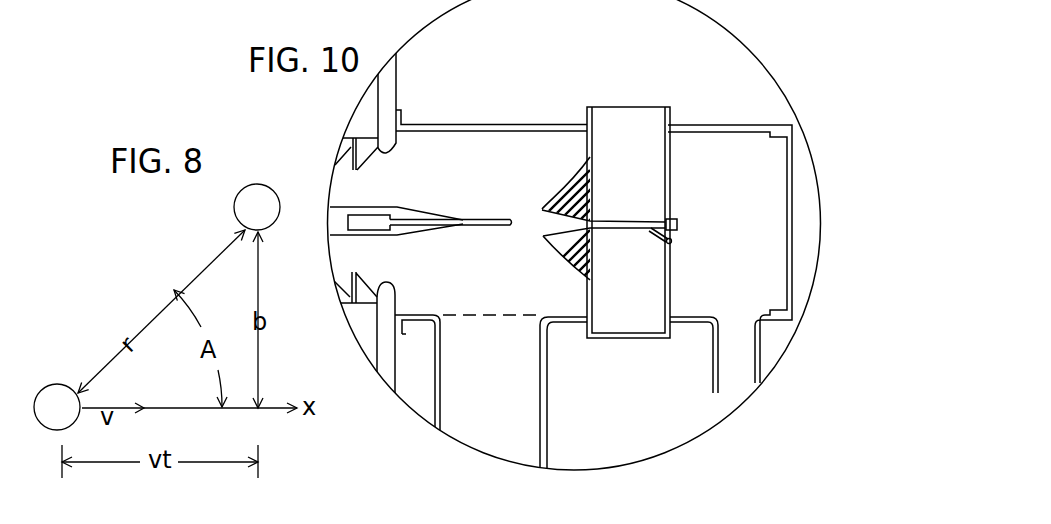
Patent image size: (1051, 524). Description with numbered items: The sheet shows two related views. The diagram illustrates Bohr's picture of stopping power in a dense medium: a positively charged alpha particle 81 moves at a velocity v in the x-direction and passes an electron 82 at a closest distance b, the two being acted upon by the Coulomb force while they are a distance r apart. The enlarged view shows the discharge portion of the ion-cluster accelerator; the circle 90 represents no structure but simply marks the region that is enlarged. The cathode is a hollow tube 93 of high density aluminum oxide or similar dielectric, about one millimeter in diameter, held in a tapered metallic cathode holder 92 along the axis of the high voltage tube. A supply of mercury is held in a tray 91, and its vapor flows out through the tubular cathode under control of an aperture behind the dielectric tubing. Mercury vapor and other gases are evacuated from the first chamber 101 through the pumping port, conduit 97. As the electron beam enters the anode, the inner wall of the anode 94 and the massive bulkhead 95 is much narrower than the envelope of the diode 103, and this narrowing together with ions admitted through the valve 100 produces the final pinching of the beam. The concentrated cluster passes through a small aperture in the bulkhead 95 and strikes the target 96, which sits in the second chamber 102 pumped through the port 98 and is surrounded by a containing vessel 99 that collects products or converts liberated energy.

In FIG. 8, the alpha particle 81 is at (45, 386).
In FIG. 8, the electron 82 is at (236, 201).
In FIG. 10, the circle 90 is at (790, 112).
In FIG. 10, the tray 91 is at (373, 212).
In FIG. 10, the tapered metallic cathode holder 92 is at (425, 212).
In FIG. 10, the hollow tube 93 is at (478, 218).
In FIG. 10, the anode 94 is at (567, 195).
In FIG. 10, the massive bulkhead 95 is at (630, 86).
In FIG. 10, the target 96 is at (672, 220).
In FIG. 10, the conduit 97 is at (515, 373).
In FIG. 10, the port 98 is at (733, 362).
In FIG. 10, the containing vessel 99 is at (785, 202).
In FIG. 10, the valve 100 is at (655, 238).
In FIG. 10, the first chamber 101 is at (468, 268).
In FIG. 10, the second chamber 102 is at (737, 231).
In FIG. 10, the envelope of the diode 103 is at (497, 133).